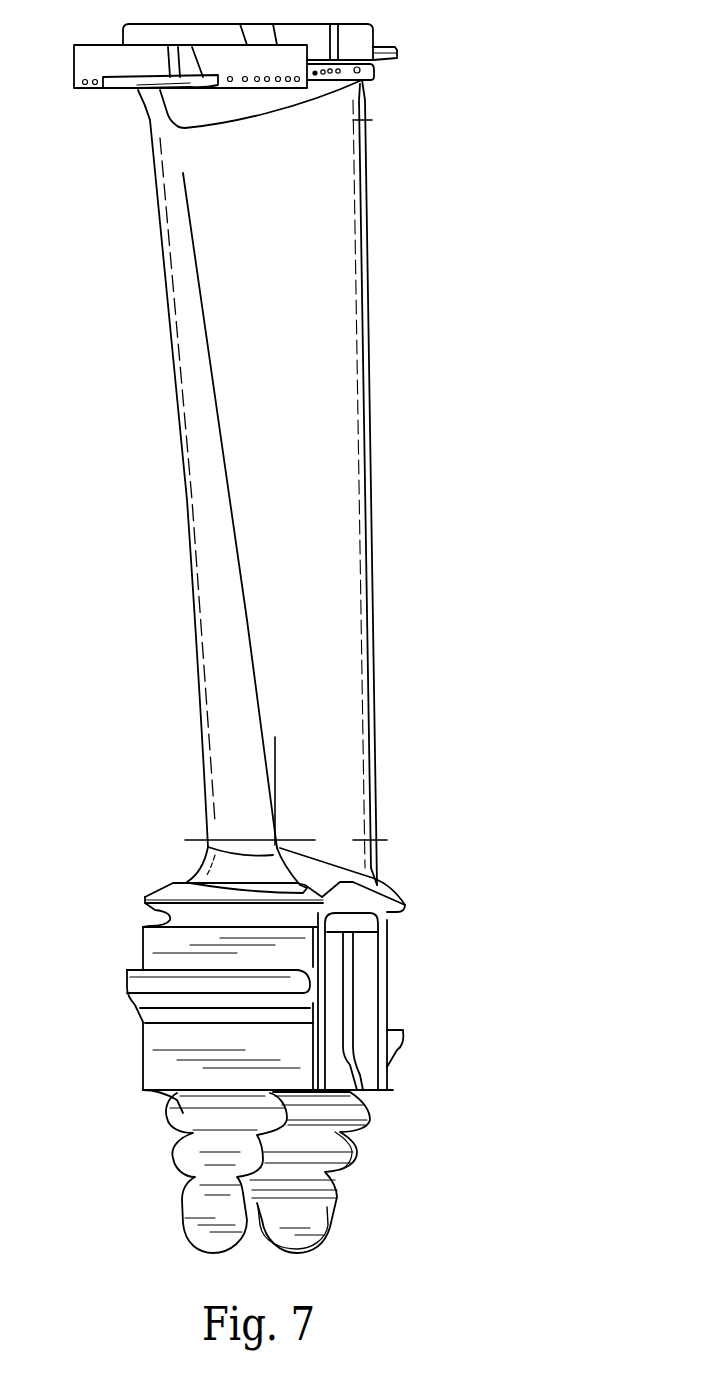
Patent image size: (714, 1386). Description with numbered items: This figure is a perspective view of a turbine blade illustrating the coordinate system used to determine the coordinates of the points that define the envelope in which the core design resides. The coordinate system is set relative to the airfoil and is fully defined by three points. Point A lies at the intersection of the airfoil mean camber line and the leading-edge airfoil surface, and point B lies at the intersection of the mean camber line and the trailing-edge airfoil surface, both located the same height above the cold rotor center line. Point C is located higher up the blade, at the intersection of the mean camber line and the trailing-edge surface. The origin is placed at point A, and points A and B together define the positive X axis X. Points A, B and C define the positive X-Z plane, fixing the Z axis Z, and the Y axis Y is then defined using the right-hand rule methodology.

The point A is at (260, 818).
The point B is at (382, 833).
The point C is at (375, 113).
The X axis X is at (355, 834).
The Y axis Y is at (238, 834).
The Z axis Z is at (278, 772).